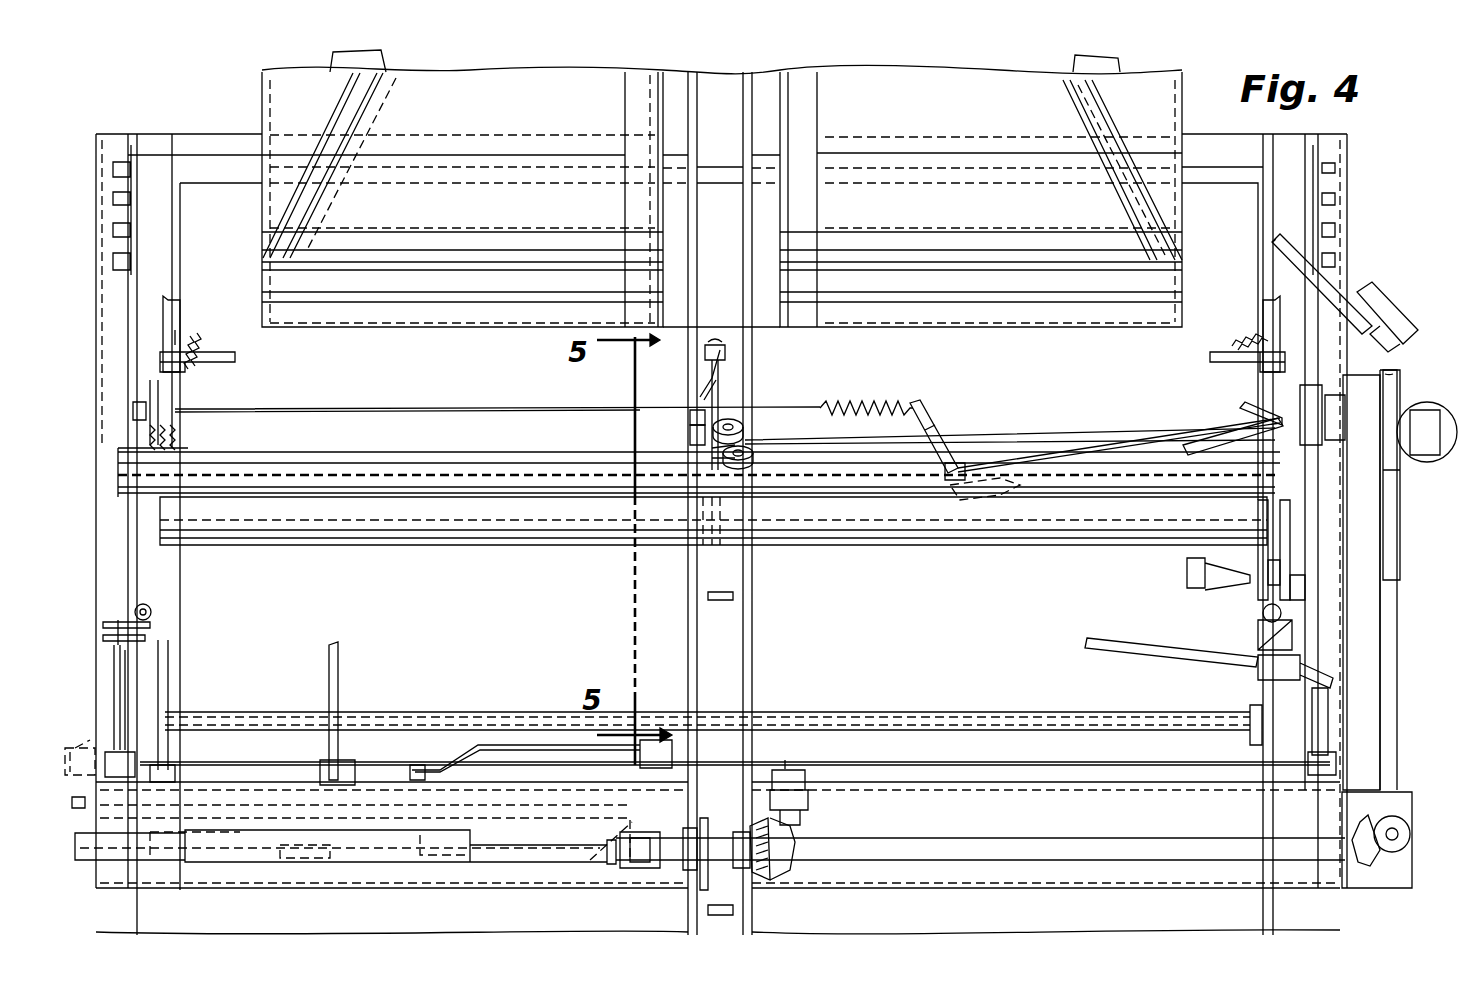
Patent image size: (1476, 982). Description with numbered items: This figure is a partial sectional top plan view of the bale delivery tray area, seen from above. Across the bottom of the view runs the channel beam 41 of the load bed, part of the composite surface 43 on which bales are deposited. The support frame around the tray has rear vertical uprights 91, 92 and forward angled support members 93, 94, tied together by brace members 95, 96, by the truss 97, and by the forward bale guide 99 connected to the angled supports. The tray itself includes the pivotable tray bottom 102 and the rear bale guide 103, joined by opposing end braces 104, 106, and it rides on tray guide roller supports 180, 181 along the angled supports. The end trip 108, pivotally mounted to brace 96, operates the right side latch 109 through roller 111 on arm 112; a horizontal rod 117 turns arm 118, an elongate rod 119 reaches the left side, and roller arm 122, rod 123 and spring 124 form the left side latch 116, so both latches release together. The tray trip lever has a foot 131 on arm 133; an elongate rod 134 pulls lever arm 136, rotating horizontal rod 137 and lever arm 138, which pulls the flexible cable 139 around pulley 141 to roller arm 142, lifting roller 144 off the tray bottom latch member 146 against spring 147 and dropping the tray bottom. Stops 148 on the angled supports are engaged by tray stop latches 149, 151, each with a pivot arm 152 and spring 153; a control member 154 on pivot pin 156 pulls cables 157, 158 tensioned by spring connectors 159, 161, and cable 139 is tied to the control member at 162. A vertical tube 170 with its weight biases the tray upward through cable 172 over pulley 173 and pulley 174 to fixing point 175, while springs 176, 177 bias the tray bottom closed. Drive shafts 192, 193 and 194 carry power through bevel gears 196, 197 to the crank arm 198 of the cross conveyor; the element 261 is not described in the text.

The channel beam 41 is at (688, 925).
The composite surface 43 is at (918, 634).
The upright structural component 91 is at (112, 903).
The upright structural component 92 is at (1345, 888).
The angled support member 93 is at (98, 302).
The angled support member 94 is at (1345, 134).
The brace member 95 is at (118, 527).
The brace member 96 is at (1345, 565).
The truss 97 is at (485, 895).
The forward bale guide 99 is at (466, 446).
The tray bottom 102 is at (505, 548).
The rear bale guide 103 is at (482, 705).
The end brace 104 is at (172, 668).
The end brace 106 is at (1260, 680).
The end trip 108 is at (1158, 645).
The right side latch 109 is at (1290, 613).
The roller 111 is at (1262, 613).
The arm 112 is at (1292, 655).
The left side latch 116 is at (126, 616).
The horizontal rod 117 is at (1328, 720).
The arm 118 is at (1338, 762).
The elongate rod 119 is at (1015, 770).
The roller arm 122 is at (114, 646).
The rod 123 is at (118, 678).
The spring 124 is at (90, 748).
The foot 131 is at (1187, 572).
The arm 133 is at (1292, 545).
The elongate rod 134 is at (1292, 570).
The lever arm 136 is at (1306, 580).
The horizontal rod 137 is at (1280, 520).
The lever arm 138 is at (1248, 404).
The flexible cable 139 is at (1065, 428).
The pulley 141 is at (744, 430).
The roller arm 142 is at (700, 396).
The roller 144 is at (690, 418).
The tray bottom latch member 146 is at (690, 438).
The spring 147 is at (726, 347).
The stops 148 is at (128, 195).
The tray stop latch 149 is at (196, 340).
The tray stop latch 151 is at (1246, 349).
The pivot arm 152 is at (170, 318).
The spring 153 is at (214, 348).
The control member 154 is at (922, 412).
The pivot pin 156 is at (963, 466).
The cable 157 is at (478, 404).
The cable 158 is at (1198, 412).
The spring connector 159 is at (845, 405).
The spring connector 161 is at (992, 500).
The attachment point 162 is at (935, 428).
The vertical cylindrical tube 170 is at (1432, 370).
The cable 172 is at (1172, 448).
The pulley 173 is at (1412, 470).
The pulley 174 is at (754, 455).
The fixing point 175 is at (712, 450).
The spring 176 is at (1325, 420).
The spring 177 is at (178, 432).
The tray guide roller support 180 is at (160, 412).
The tray guide roller support 181 is at (1345, 408).
The drive shaft 192 is at (1335, 288).
The drive shaft 193 is at (1398, 650).
The drive shaft 194 is at (1180, 838).
The bevel gear 196 is at (756, 866).
The bevel gear 197 is at (800, 830).
The crank arm 198 is at (752, 760).
The post opening 261 is at (752, 914).